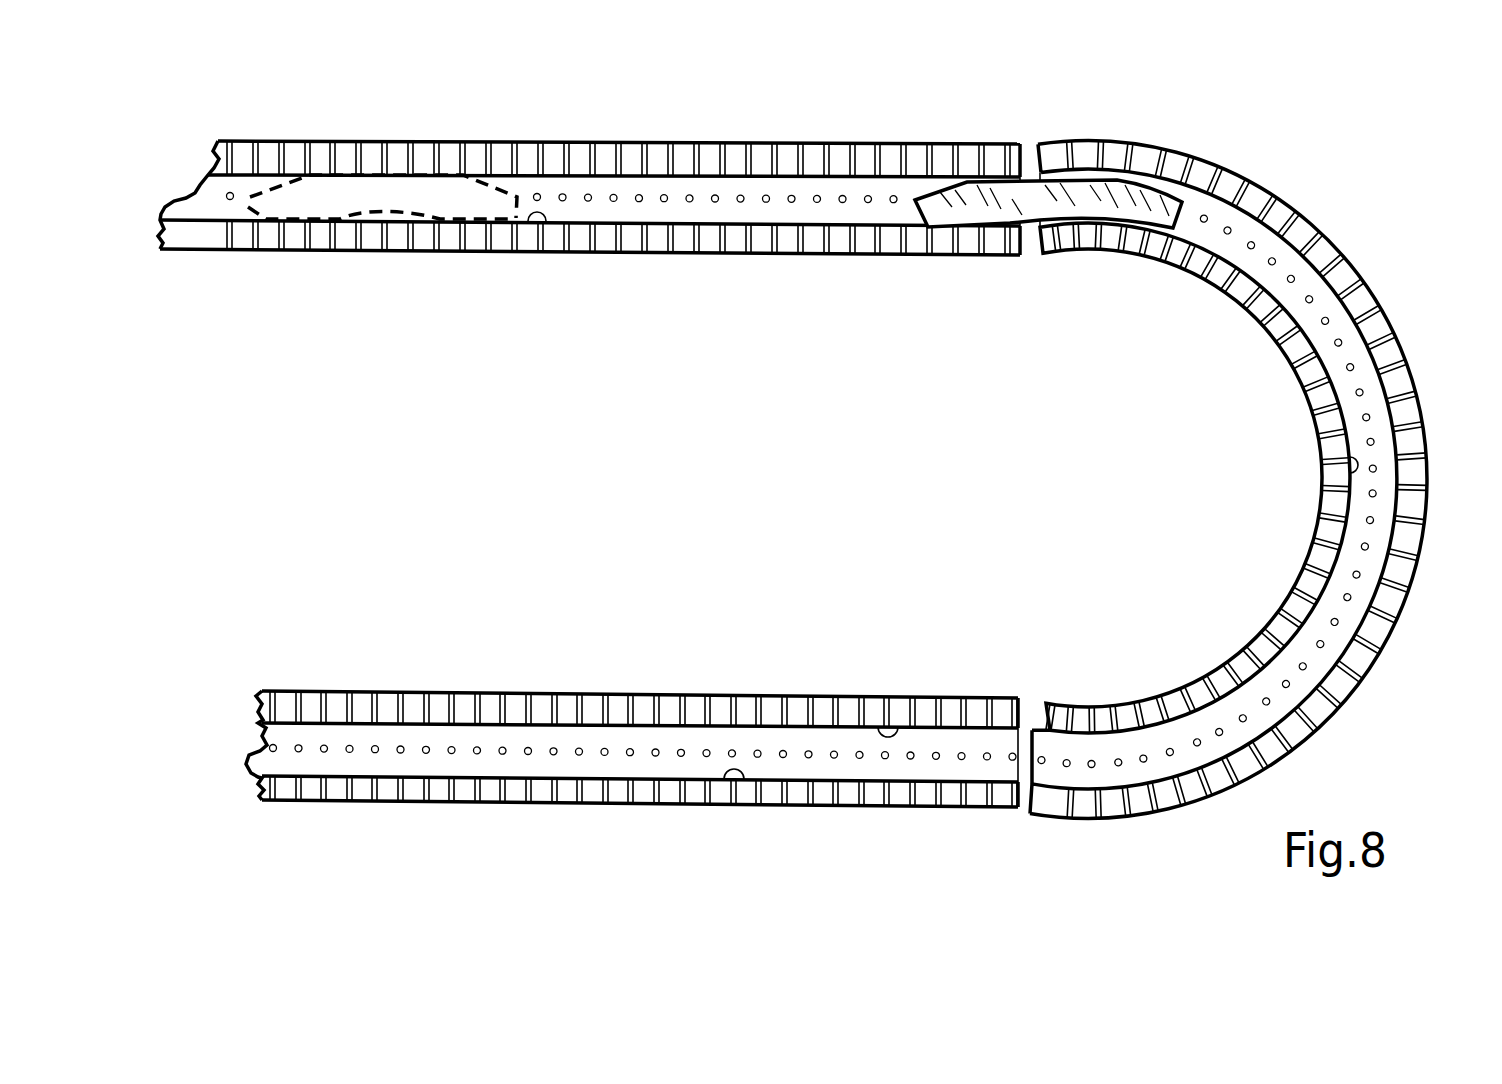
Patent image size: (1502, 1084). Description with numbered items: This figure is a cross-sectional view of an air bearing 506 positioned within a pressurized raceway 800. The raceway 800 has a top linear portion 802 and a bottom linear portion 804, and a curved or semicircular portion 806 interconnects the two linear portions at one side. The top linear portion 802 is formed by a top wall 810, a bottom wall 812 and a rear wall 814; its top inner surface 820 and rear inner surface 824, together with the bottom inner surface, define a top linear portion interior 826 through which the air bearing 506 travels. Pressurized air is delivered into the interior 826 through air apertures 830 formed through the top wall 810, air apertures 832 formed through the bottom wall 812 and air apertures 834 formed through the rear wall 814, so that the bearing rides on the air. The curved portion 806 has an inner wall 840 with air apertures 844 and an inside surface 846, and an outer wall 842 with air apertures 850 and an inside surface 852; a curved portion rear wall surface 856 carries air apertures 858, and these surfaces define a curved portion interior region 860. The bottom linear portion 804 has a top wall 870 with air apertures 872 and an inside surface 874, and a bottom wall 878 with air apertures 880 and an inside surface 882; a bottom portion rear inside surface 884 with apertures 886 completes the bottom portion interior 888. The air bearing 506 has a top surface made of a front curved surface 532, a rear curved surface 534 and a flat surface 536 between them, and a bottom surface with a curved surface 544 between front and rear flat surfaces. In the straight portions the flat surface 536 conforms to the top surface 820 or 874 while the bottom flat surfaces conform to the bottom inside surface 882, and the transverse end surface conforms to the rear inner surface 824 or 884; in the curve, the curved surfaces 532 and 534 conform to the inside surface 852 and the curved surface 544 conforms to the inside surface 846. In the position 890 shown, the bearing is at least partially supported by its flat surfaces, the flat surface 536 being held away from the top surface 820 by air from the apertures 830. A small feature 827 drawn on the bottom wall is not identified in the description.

The air bearing 506 is at (245, 210).
The front curved surface 532 is at (1175, 200).
The rear curved surface 534 is at (930, 178).
The flat surface 536 is at (1036, 178).
The curved surface 544 is at (1035, 240).
The pressurized raceway 800 is at (772, 92).
The top linear portion 802 is at (573, 263).
The bottom linear portion 804 is at (548, 680).
The curved portion 806 is at (1275, 368).
The top wall 810 is at (245, 152).
The bottom wall 812 is at (190, 240).
The rear wall 814 is at (195, 180).
The top inner surface 820 is at (625, 178).
The rear inner surface 824 is at (598, 212).
The top linear portion interior 826 is at (805, 185).
The detent 827 is at (537, 222).
The air apertures 830 is at (923, 145).
The air apertures 832 is at (763, 255).
The air apertures 834 is at (664, 201).
The inner wall 840 is at (1192, 278).
The outer wall 842 is at (1343, 257).
The air apertures 844 is at (1300, 553).
The inside surface 846 is at (1320, 465).
The air apertures 850 is at (1335, 232).
The inside surface 852 is at (1383, 307).
The curved portion rear wall surface 856 is at (1347, 615).
The air apertures 858 is at (1348, 598).
The curved portion interior region 860 is at (1057, 783).
The top wall 870 is at (622, 698).
The air apertures 872 is at (787, 695).
The inside surface 874 is at (888, 727).
The bottom wall 878 is at (568, 790).
The air apertures 880 is at (680, 805).
The inside surface 882 is at (734, 783).
The bottom portion rear inside surface 884 is at (417, 753).
The apertures 886 is at (430, 691).
The bottom portion interior 888 is at (280, 733).
The position 890 is at (420, 197).